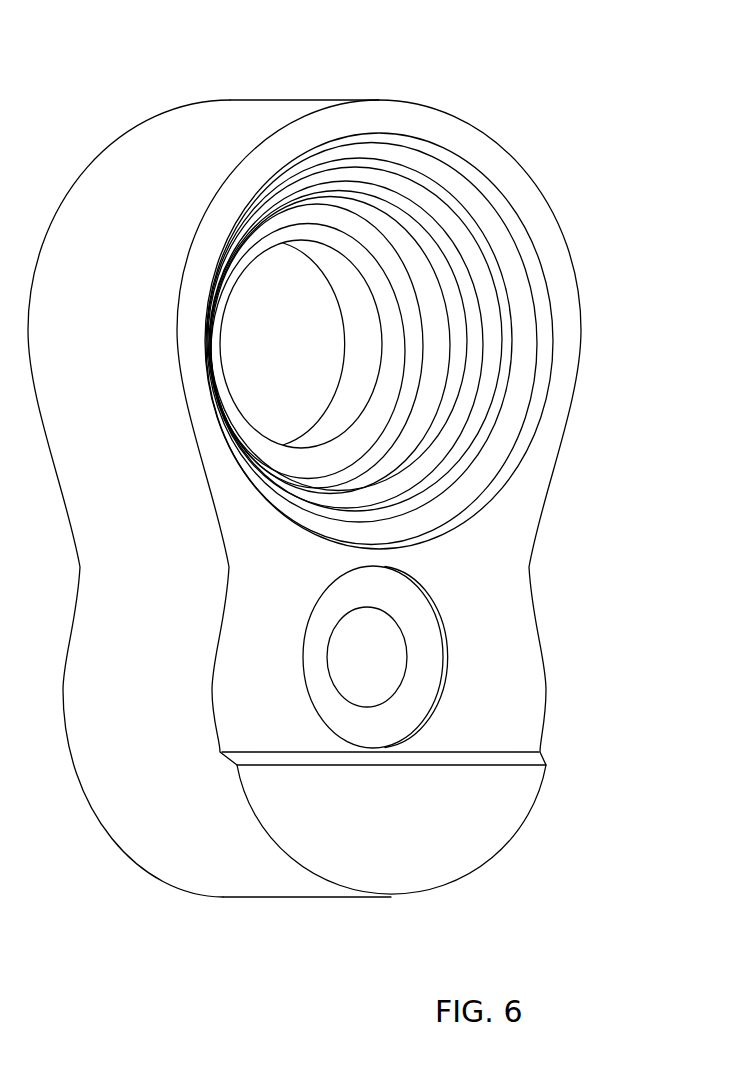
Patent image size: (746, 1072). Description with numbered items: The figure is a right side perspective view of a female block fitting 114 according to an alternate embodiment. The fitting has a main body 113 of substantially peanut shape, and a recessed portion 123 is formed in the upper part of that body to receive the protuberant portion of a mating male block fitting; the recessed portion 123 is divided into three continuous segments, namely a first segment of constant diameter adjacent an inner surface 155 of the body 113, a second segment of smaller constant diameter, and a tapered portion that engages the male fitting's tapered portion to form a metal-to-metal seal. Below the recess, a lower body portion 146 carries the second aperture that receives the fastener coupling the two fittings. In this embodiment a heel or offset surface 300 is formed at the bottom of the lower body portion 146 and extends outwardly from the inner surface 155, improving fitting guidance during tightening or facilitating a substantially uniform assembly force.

The female block fitting 114 is at (600, 81).
The main body 113 is at (553, 225).
The recessed portion 123 is at (403, 411).
The lower body portion 146 is at (541, 653).
The inner surface 155 is at (513, 692).
The offset surface 300 is at (448, 820).